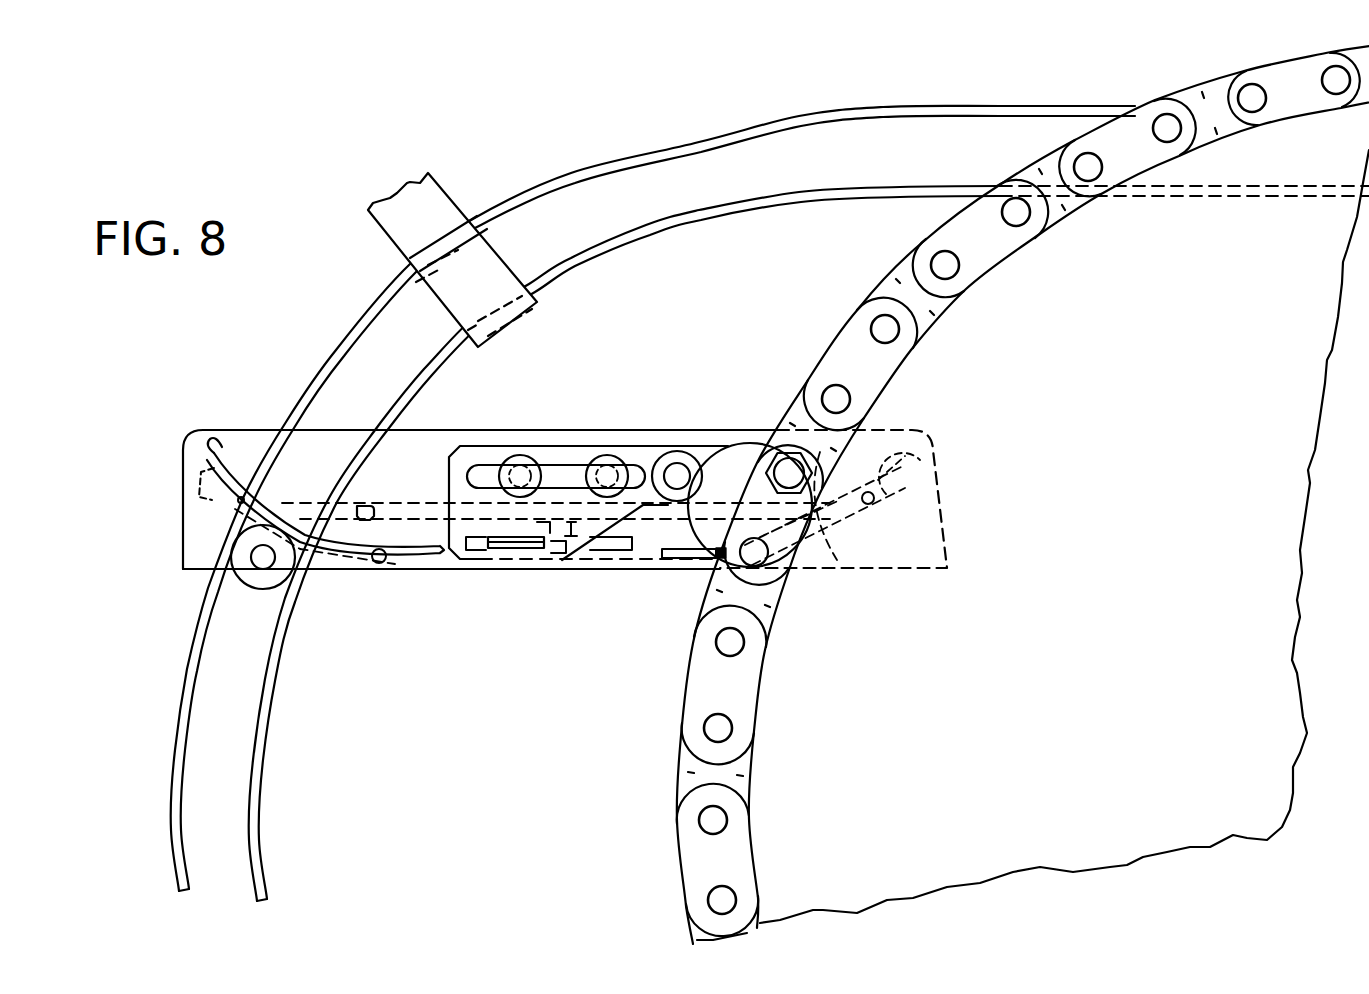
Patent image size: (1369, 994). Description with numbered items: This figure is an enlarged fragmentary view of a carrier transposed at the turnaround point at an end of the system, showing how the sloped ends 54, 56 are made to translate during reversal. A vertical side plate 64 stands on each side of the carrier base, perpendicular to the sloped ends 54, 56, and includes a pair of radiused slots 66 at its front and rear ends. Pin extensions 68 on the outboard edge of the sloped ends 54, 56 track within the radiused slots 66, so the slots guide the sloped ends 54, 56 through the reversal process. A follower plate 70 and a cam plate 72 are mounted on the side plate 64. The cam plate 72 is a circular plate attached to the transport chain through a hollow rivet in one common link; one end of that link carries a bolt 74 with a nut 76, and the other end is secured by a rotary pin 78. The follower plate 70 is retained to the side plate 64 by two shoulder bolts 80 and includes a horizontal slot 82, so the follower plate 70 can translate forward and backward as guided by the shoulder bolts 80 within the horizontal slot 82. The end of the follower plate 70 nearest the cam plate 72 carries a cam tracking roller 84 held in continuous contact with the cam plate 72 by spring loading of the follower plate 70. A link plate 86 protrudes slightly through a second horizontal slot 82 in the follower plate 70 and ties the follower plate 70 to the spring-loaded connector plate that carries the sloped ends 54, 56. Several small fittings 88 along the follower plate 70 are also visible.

The sloped end 54 is at (898, 478).
The sloped end 56 is at (203, 492).
The vertical side plate 64 is at (431, 458).
The radiused slot 66 is at (212, 457).
The pin extension 68 is at (241, 500).
The follower plate 70 is at (590, 523).
The cam plate 72 is at (742, 475).
The bolt 74 is at (786, 470).
The nut 76 is at (805, 465).
The rotary pin 78 is at (766, 560).
The shoulder bolt 80 is at (603, 465).
The horizontal slot 82 is at (485, 472).
The cam tracking roller 84 is at (676, 464).
The link plate 86 is at (497, 550).
The brackets 88 is at (556, 543).